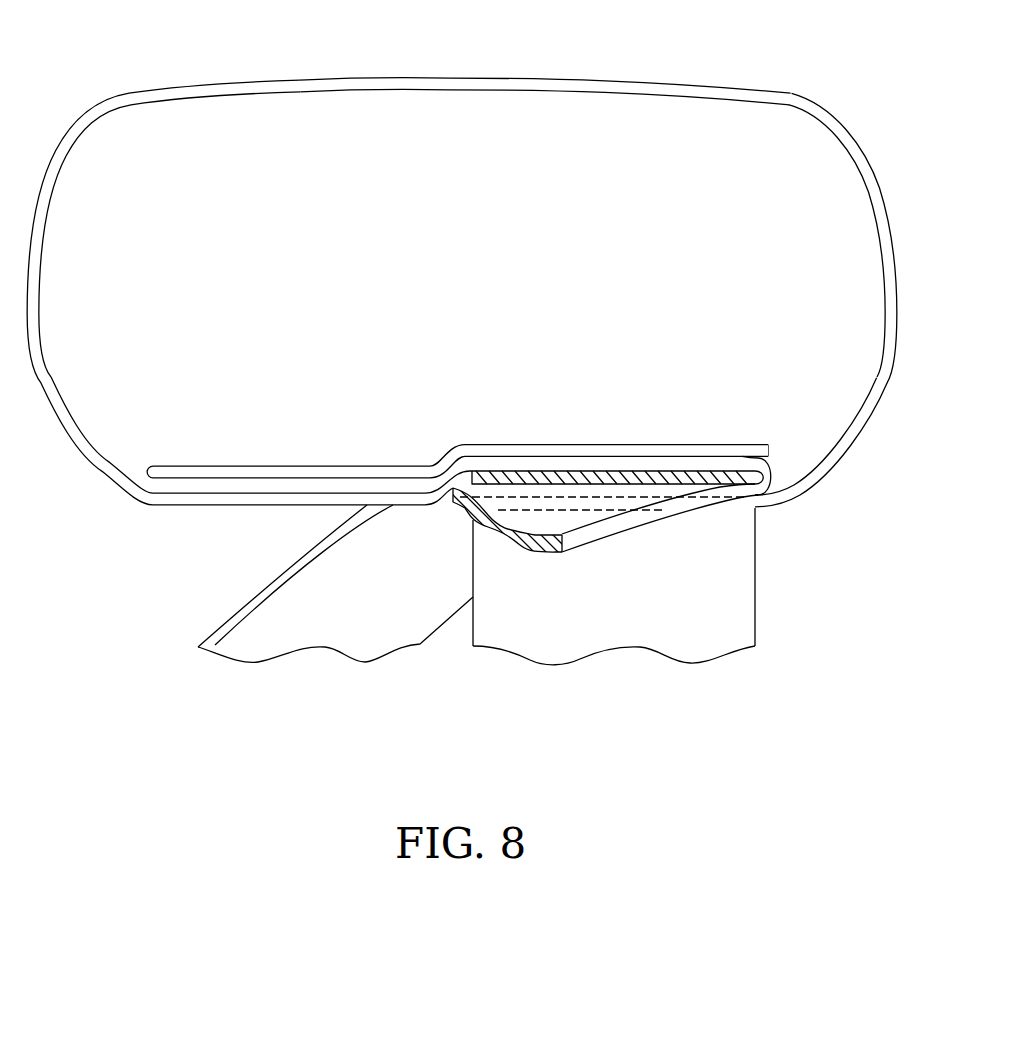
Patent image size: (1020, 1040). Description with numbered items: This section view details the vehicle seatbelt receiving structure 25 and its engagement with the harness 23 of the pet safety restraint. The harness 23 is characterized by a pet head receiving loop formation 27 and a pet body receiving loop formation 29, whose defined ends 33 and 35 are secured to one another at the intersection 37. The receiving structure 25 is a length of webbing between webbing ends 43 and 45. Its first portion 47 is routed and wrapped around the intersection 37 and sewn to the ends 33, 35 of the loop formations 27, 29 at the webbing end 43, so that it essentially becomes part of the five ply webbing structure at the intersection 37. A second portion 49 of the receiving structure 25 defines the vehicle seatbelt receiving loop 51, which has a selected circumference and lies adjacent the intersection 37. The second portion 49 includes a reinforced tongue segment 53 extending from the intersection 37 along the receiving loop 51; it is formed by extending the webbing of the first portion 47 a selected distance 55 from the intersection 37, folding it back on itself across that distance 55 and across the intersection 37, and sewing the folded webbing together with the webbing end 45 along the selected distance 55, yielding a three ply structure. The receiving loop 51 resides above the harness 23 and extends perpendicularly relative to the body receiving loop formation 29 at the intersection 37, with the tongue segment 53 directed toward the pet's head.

The harness 23 is at (700, 611).
The vehicle seatbelt receiving structure 25 is at (553, 86).
The pet head receiving loop formation 27 is at (262, 640).
The pet body receiving loop formation 29 is at (705, 571).
The defined end of head receiving loop formation 33 is at (763, 472).
The defined end of body receiving loop formation 35 is at (700, 477).
The intersection 37 is at (619, 465).
The webbing end 43 is at (768, 440).
The webbing end 45 is at (442, 508).
The first portion 47 is at (538, 505).
The second portion 49 is at (235, 90).
The vehicle seatbelt receiving loop 51 is at (633, 98).
The reinforced tongue segment 53 is at (318, 473).
The selected distance 55 is at (281, 492).